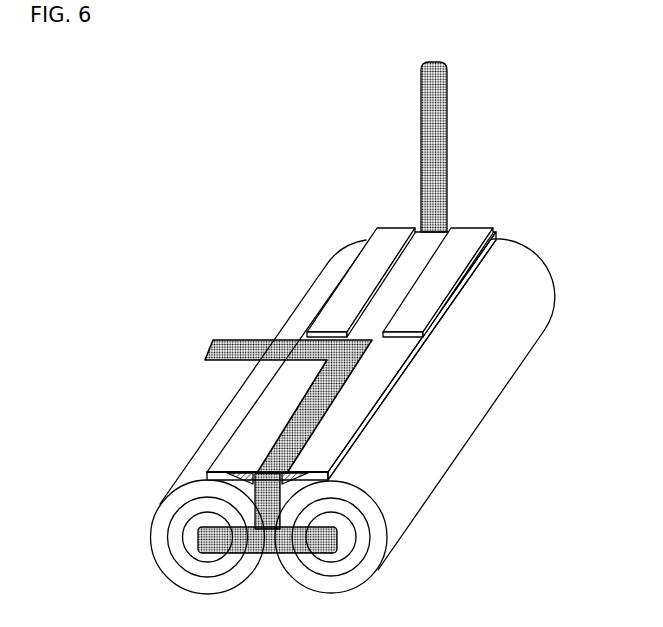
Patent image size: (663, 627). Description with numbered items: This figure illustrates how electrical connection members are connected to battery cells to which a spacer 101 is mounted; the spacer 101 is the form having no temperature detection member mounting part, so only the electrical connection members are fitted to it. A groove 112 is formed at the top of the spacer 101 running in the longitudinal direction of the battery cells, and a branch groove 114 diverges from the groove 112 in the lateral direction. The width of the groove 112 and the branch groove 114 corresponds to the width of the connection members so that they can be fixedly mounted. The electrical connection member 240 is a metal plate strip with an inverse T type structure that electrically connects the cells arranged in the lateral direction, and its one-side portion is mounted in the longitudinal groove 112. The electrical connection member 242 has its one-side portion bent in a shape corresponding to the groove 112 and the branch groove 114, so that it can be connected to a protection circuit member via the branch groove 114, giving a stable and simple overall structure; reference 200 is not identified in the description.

The cylindrical battery cells 200 is at (168, 512).
The spacer 101 is at (262, 419).
The groove 112 is at (407, 277).
The branch groove 114 is at (420, 333).
The electrical connection member 240 is at (433, 140).
The electrical connection member 242 is at (240, 338).